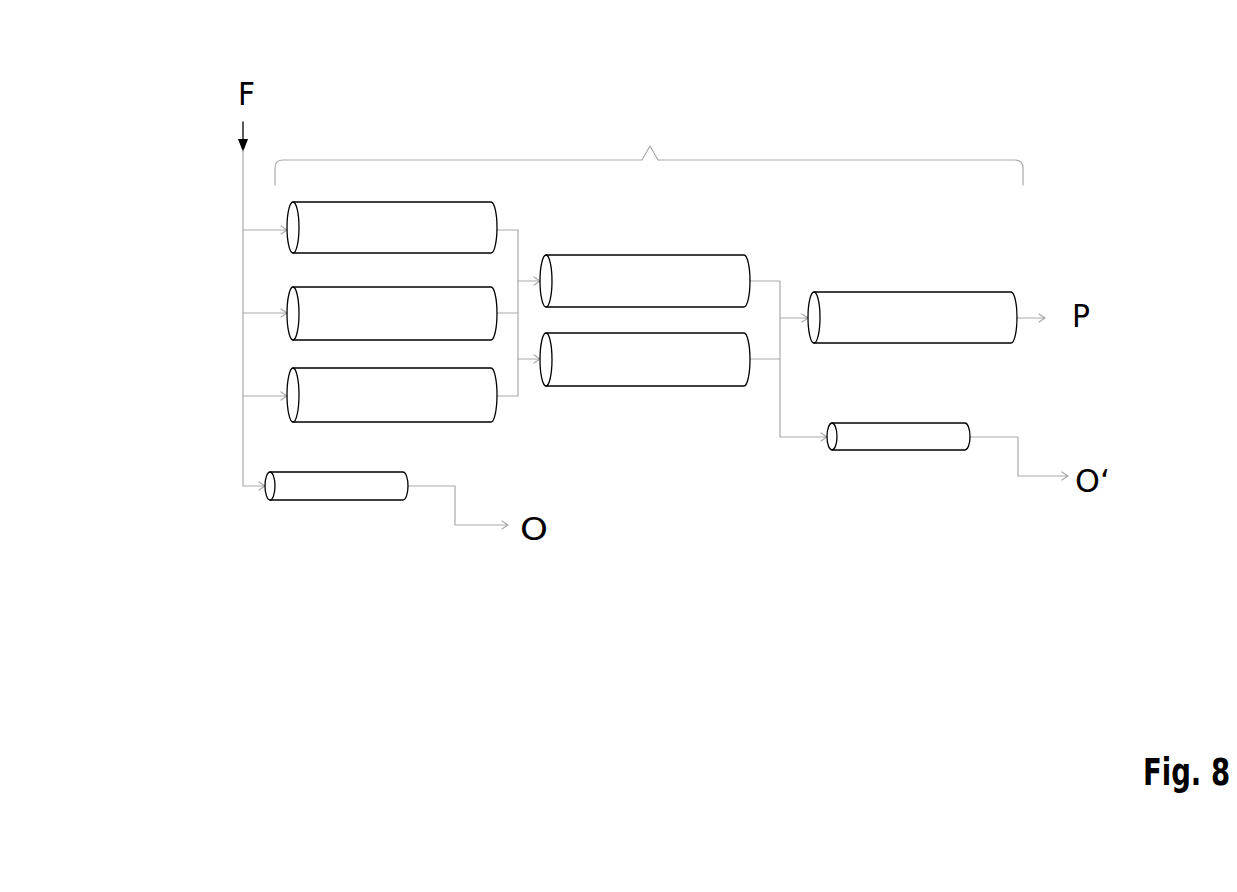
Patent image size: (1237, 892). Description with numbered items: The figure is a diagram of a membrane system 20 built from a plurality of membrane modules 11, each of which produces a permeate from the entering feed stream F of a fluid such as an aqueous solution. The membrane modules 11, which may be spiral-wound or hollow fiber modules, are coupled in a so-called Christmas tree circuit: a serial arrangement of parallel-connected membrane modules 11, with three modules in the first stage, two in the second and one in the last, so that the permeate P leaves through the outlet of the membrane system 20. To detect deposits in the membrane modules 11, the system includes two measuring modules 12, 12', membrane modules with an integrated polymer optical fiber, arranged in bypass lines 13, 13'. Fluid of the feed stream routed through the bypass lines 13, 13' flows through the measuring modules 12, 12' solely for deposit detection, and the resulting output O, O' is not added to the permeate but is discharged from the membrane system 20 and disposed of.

The membrane module 11 is at (402, 245).
The measuring module 12 is at (336, 514).
The measuring module 12' is at (898, 468).
The bypass line 13 is at (229, 320).
The bypass line 13' is at (805, 361).
The membrane system 20 is at (649, 140).